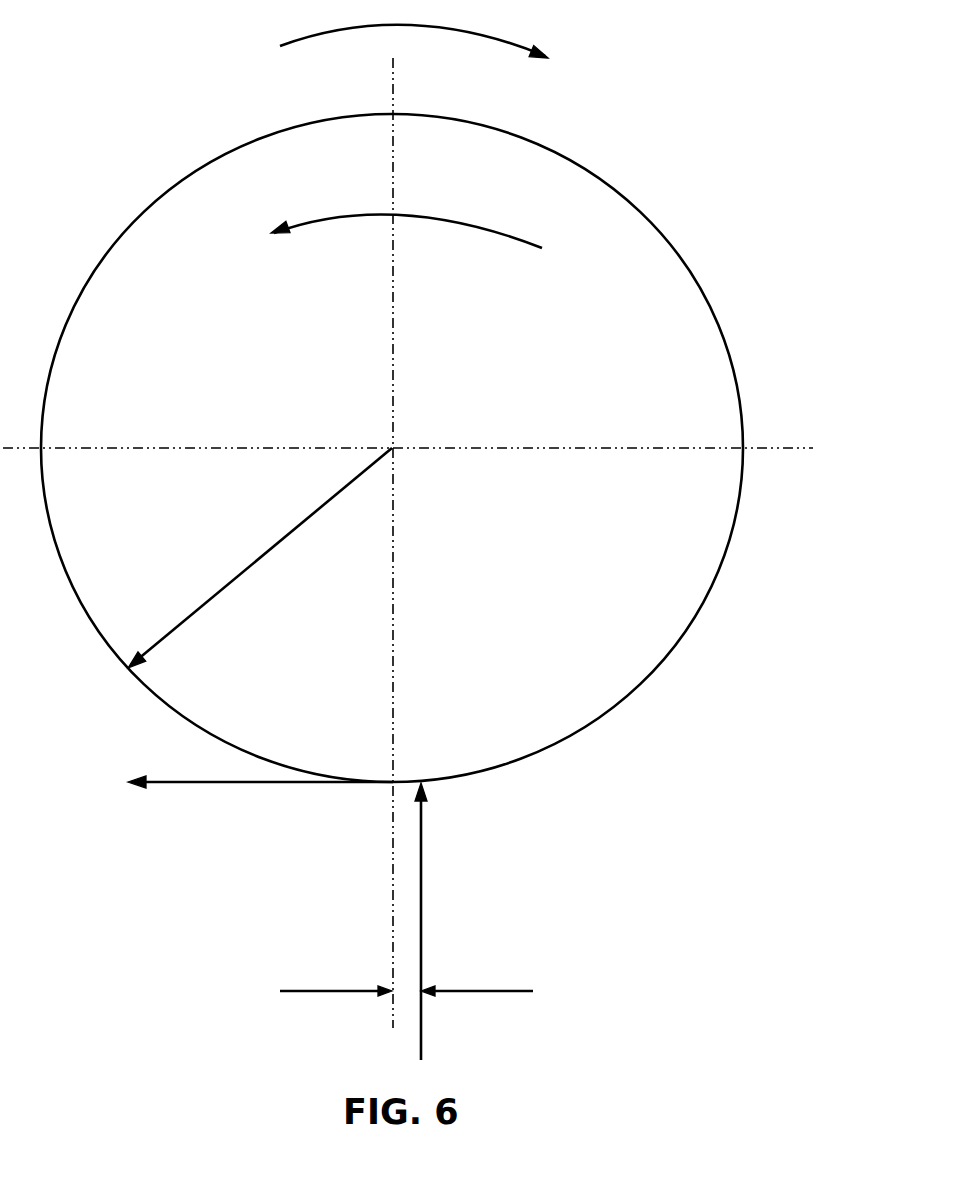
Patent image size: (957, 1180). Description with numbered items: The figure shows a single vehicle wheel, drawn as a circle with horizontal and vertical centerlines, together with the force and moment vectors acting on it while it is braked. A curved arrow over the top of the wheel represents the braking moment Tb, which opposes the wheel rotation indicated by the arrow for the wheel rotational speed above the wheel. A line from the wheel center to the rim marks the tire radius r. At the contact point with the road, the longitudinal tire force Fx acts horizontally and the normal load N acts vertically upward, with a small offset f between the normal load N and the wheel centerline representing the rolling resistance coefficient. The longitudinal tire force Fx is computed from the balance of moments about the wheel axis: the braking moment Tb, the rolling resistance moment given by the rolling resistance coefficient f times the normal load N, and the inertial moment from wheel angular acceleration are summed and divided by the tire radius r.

The braking moment Tb is at (395, 261).
The tire radius r is at (260, 558).
The tire force Fx is at (260, 832).
The normal load N is at (456, 921).
The rolling resistance coefficient f is at (406, 968).